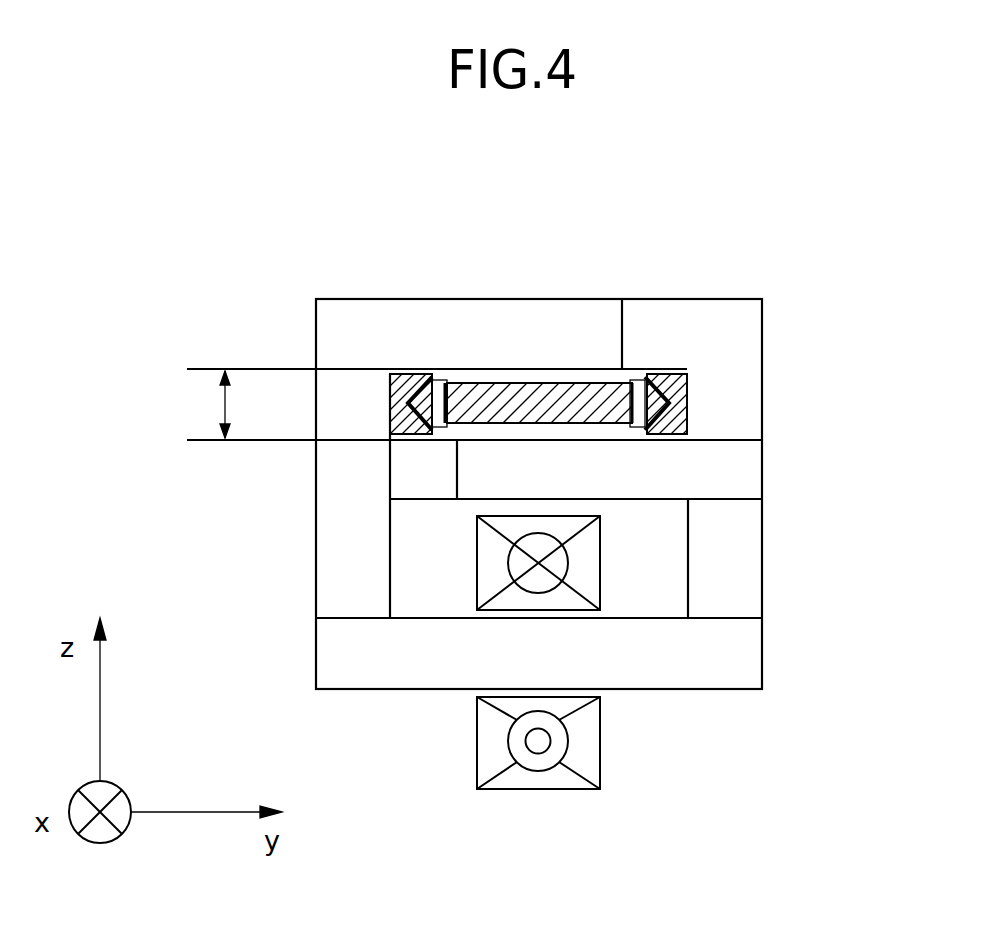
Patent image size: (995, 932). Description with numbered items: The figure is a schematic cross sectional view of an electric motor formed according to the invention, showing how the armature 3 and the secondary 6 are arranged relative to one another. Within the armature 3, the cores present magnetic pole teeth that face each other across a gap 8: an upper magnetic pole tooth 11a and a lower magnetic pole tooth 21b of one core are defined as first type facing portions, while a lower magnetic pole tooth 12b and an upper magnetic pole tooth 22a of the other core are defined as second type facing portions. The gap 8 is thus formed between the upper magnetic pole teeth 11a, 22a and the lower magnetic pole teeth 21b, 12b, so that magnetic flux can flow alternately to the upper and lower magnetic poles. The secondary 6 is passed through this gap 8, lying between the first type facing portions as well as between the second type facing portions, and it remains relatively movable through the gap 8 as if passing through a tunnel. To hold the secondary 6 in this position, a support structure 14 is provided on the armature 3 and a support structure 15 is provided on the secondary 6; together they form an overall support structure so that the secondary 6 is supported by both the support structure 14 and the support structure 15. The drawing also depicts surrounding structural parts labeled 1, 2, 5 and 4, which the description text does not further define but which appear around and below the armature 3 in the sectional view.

The housing / frame 1 is at (332, 590).
The side wall 2 is at (743, 566).
The armature 3 is at (745, 656).
The coil / magnet 4 is at (487, 760).
The bottom portion 5 is at (407, 675).
The secondary 6 is at (572, 400).
The gap 8 is at (288, 404).
The upper magnetic pole tooth 11a is at (480, 318).
The lower magnetic pole tooth 12b is at (406, 472).
The support structure 14 is at (410, 374).
The support structure 15 is at (438, 378).
The lower magnetic pole tooth 21b is at (743, 466).
The upper magnetic pole tooth 22a is at (700, 325).